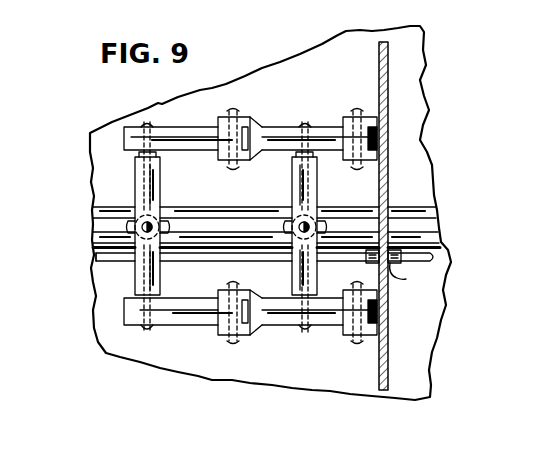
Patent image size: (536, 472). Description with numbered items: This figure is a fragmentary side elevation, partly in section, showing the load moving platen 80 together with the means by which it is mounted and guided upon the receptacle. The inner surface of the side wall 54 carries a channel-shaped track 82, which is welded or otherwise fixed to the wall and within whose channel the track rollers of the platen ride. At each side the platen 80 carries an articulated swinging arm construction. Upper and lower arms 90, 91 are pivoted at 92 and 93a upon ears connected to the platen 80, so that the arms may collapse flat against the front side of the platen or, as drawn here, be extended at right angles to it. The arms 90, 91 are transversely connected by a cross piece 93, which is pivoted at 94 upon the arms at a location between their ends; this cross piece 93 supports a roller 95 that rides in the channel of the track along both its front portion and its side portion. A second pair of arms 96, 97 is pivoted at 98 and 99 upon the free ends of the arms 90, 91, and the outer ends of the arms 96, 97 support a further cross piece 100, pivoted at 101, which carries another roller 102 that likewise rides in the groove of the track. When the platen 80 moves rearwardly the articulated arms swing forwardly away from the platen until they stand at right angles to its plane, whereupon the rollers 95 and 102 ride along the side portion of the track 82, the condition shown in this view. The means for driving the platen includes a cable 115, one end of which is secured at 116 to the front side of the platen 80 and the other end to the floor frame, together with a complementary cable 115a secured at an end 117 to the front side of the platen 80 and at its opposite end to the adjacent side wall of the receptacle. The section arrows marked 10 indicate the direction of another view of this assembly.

The section line of FIG. 10 is at (308, 183).
The side wall 54 is at (414, 150).
The platen 80 is at (386, 95).
The track 82 is at (436, 198).
The upper arm 90 is at (270, 128).
The lower arm 91 is at (280, 314).
The pivot 92 is at (355, 110).
The cross piece 93 is at (312, 180).
The pivot 93a is at (358, 343).
The pivot 94 is at (305, 122).
The roller 95 is at (325, 227).
The arm 96 is at (187, 135).
The arm 97 is at (202, 290).
The pivot 98 is at (235, 110).
The pivot 99 is at (229, 342).
The cross piece 100 is at (157, 162).
The pivot 101 is at (141, 124).
The roller 102 is at (168, 226).
The cable 115 is at (450, 260).
The complementary cable 115a is at (101, 263).
The securing point 116 is at (410, 284).
The securing point 117 is at (367, 261).